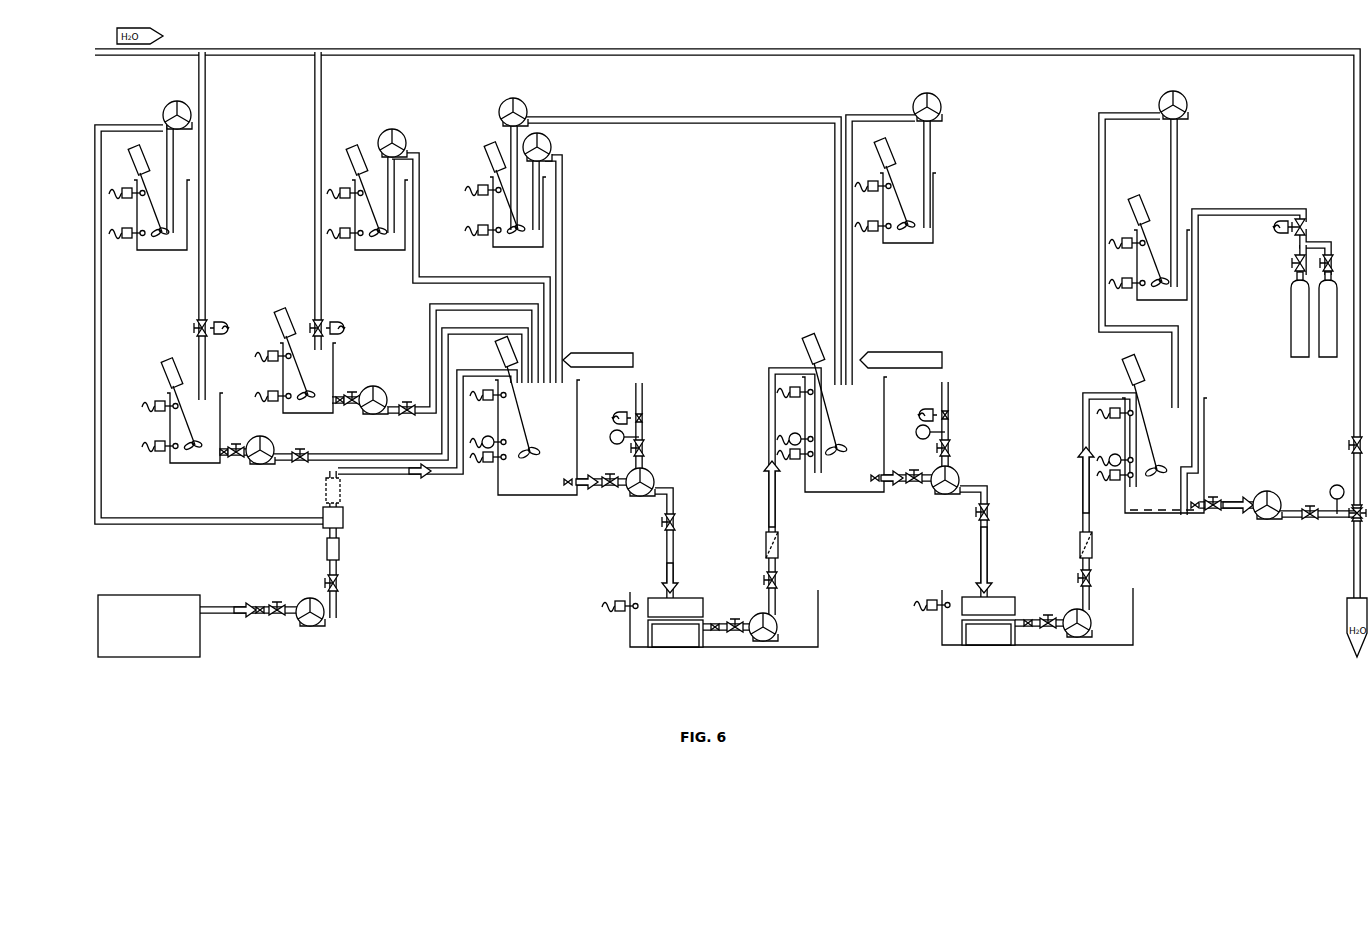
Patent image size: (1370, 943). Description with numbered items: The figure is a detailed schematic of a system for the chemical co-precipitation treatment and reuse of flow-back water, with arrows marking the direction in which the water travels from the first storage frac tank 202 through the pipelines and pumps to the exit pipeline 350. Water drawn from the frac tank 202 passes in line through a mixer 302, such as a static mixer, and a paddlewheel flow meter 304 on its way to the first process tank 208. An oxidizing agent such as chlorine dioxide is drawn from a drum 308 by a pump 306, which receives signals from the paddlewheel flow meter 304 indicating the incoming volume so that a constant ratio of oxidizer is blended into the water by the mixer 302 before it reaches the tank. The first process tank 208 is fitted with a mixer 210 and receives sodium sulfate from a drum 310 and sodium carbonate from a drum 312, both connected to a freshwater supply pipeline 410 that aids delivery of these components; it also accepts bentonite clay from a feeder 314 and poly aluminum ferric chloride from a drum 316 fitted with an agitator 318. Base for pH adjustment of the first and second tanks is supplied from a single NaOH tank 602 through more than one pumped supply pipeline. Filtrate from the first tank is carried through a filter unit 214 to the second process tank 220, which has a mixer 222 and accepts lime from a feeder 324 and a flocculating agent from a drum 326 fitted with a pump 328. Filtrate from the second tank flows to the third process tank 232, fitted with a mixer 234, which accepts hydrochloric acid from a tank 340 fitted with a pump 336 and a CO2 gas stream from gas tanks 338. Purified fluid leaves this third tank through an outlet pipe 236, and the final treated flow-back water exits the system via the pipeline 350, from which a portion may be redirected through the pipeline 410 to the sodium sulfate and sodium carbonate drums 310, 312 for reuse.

The frac tank 202 is at (149, 615).
The first process tank 208 is at (525, 456).
The mixer 210 is at (517, 397).
The filter bag stand #1 214 is at (710, 638).
The second process tank 220 is at (832, 454).
The mixer 222 is at (824, 394).
The third process tank 232 is at (1152, 475).
The mixer 234 is at (1144, 415).
The outlet pipe 236 is at (1023, 633).
The mixer 302 is at (369, 535).
The paddlewheel flow meter 304 is at (426, 434).
The pump 306 is at (162, 115).
The drum 308 is at (149, 219).
The sodium sulfate drum 310 is at (335, 373).
The sodium carbonate drum 312 is at (225, 427).
The feeder 314 is at (598, 352).
The drum 316 is at (367, 210).
The agitator 318 is at (392, 134).
The feeder 324 is at (901, 348).
The drum 326 is at (895, 207).
The pump 328 is at (944, 107).
The pump 336 is at (1145, 105).
The gas tanks 338 is at (1305, 298).
The tank 340 is at (1149, 256).
The pipeline 350 is at (1338, 515).
The pipeline 410 is at (726, 313).
The NaOH tank 602 is at (508, 185).